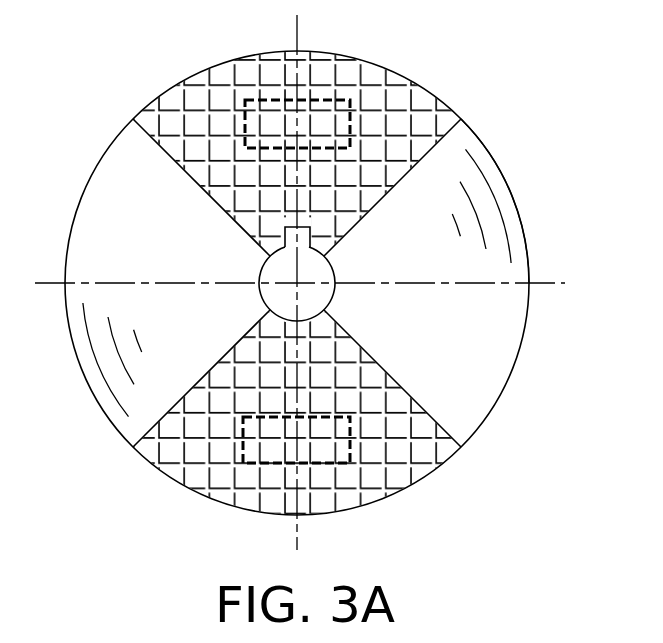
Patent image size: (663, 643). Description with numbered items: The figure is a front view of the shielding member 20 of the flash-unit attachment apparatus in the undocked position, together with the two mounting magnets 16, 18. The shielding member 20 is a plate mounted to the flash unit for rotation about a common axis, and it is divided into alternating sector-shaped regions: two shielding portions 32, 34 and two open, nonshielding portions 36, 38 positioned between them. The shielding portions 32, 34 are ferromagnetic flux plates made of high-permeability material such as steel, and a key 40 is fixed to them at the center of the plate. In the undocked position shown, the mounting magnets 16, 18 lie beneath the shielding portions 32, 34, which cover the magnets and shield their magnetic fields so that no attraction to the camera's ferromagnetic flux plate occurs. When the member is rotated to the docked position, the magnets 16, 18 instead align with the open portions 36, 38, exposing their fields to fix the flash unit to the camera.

The mounting magnet 16 is at (342, 100).
The mounting magnet 18 is at (278, 466).
The shielding member 20 is at (430, 93).
The shielding portion 32 is at (222, 67).
The shielding portion 34 is at (418, 472).
The open portion 36 is at (88, 205).
The open portion 38 is at (498, 168).
The key 40 is at (333, 293).